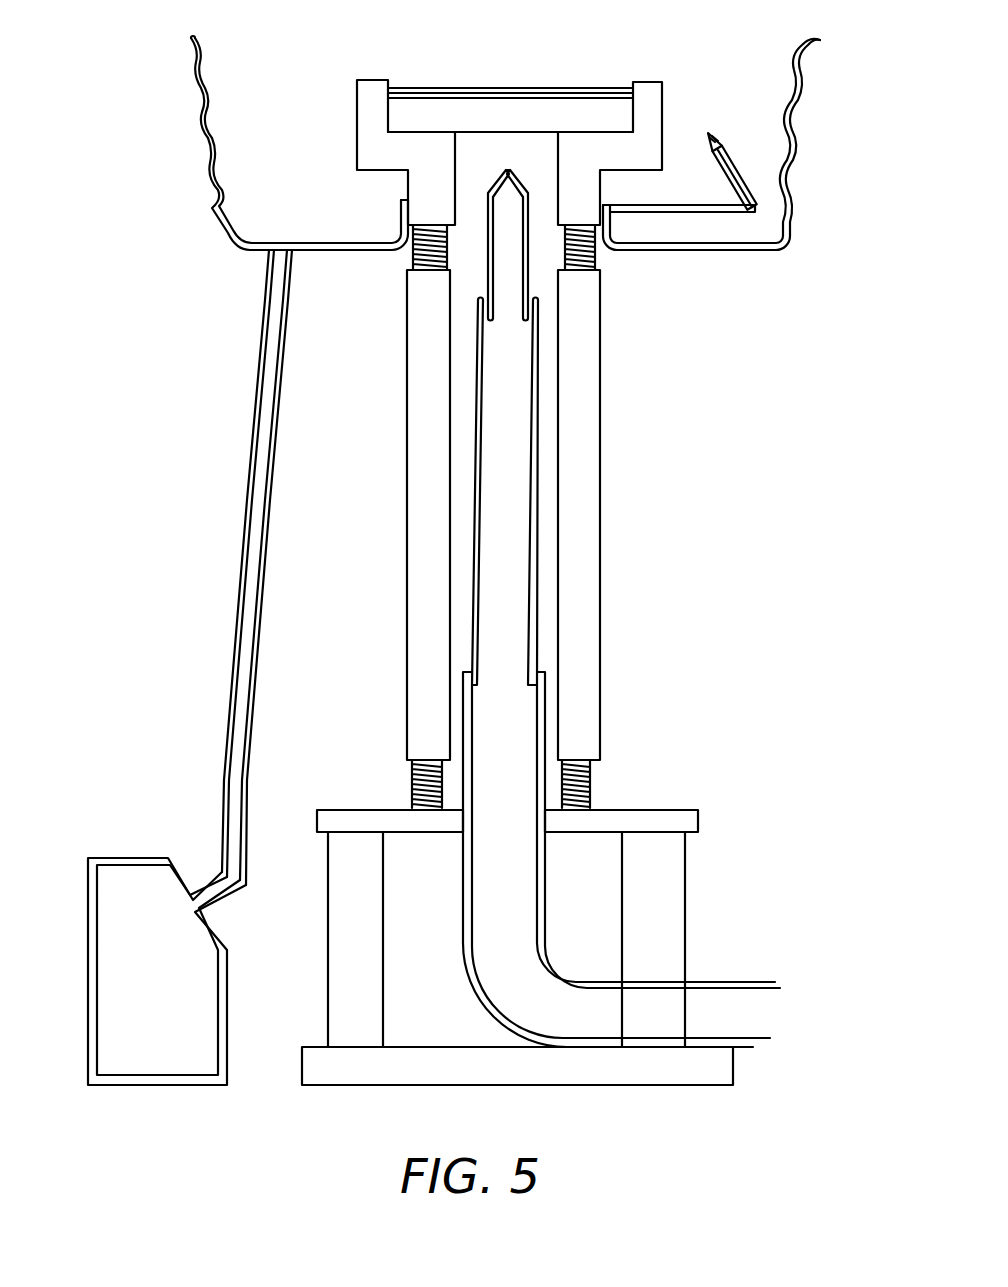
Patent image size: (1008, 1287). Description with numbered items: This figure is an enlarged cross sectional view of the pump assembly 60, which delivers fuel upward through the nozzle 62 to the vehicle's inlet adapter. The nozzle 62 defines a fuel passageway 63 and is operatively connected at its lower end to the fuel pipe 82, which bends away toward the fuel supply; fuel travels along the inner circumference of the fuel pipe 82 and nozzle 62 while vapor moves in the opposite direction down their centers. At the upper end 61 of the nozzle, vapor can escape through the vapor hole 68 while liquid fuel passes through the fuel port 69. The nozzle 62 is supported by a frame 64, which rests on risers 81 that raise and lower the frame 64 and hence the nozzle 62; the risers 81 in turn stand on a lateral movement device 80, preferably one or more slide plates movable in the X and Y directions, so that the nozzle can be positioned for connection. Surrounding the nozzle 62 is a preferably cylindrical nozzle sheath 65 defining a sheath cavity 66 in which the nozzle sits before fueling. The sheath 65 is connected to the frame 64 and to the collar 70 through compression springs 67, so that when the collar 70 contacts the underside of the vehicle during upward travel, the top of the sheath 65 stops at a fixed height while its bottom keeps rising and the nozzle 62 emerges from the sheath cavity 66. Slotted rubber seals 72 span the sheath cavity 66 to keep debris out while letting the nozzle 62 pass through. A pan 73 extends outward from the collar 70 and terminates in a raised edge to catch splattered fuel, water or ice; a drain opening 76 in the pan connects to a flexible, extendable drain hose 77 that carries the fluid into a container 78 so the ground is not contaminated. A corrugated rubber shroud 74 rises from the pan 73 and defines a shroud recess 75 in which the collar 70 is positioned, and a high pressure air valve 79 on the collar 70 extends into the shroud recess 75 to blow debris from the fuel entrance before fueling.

The pump assembly 60 is at (556, 525).
The upper end 61 is at (503, 282).
The nozzle 62 is at (538, 337).
The fuel passageway 63 is at (523, 380).
The frame 64 is at (690, 815).
The nozzle sheath 65 is at (577, 438).
The sheath cavity 66 is at (553, 483).
The compression springs 67 is at (592, 250).
The vapor hole 68 is at (507, 167).
The fuel port 69 is at (485, 320).
The collar 70 is at (652, 103).
The seals 72 is at (566, 91).
The pan 73 is at (785, 238).
The shroud 74 is at (820, 48).
The shroud recess 75 is at (778, 97).
The drain opening 76 is at (283, 242).
The drain hose 77 is at (283, 393).
The container 78 is at (127, 858).
The high pressure air valve 79 is at (750, 197).
The lateral movement device 80 is at (713, 1077).
The risers 81 is at (670, 923).
The fuel pipe 82 is at (542, 705).